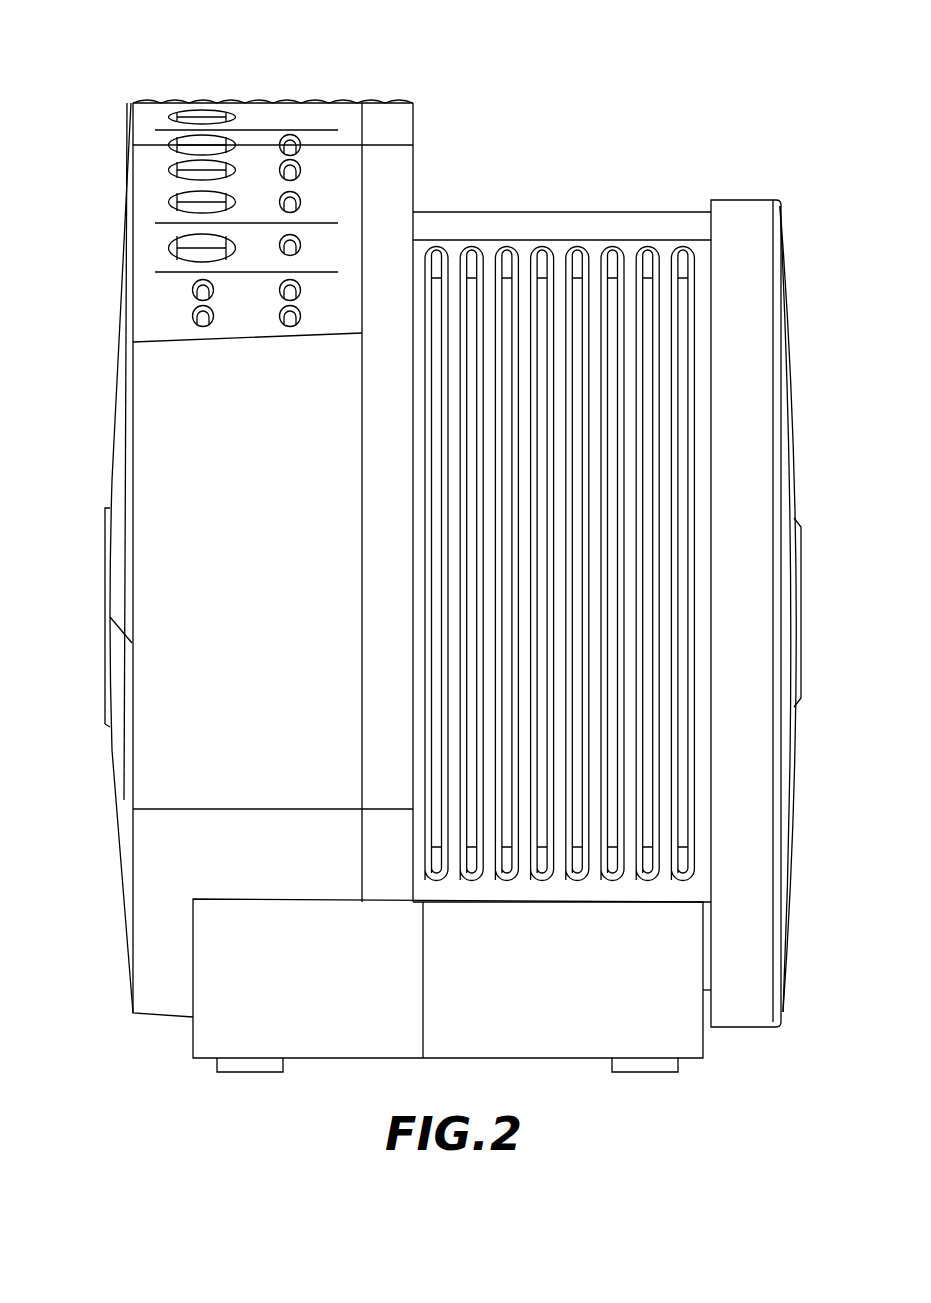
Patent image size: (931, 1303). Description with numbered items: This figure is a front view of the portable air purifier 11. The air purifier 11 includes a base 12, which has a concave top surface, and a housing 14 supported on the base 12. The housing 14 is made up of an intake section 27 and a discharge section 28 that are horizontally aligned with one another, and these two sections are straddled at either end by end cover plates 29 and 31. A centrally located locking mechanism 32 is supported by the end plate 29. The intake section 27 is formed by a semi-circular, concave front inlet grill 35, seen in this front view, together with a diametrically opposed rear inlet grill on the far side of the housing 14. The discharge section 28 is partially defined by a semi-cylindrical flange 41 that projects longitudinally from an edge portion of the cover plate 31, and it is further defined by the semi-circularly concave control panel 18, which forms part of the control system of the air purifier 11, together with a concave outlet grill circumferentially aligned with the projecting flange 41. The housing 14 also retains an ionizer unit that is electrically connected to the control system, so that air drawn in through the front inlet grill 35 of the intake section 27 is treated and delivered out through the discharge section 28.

The portable air purifier 11 is at (651, 120).
The base 12 is at (539, 1033).
The housing 14 is at (421, 204).
The control panel 18 is at (251, 330).
The intake section 27 is at (628, 501).
The discharge section 28 is at (338, 96).
The end cover plate 29 is at (786, 833).
The end cover plate 31 is at (106, 698).
The locking mechanism 32 is at (802, 668).
The front inlet grill 35 is at (686, 403).
The semi-cylindrical flange 41 is at (261, 728).